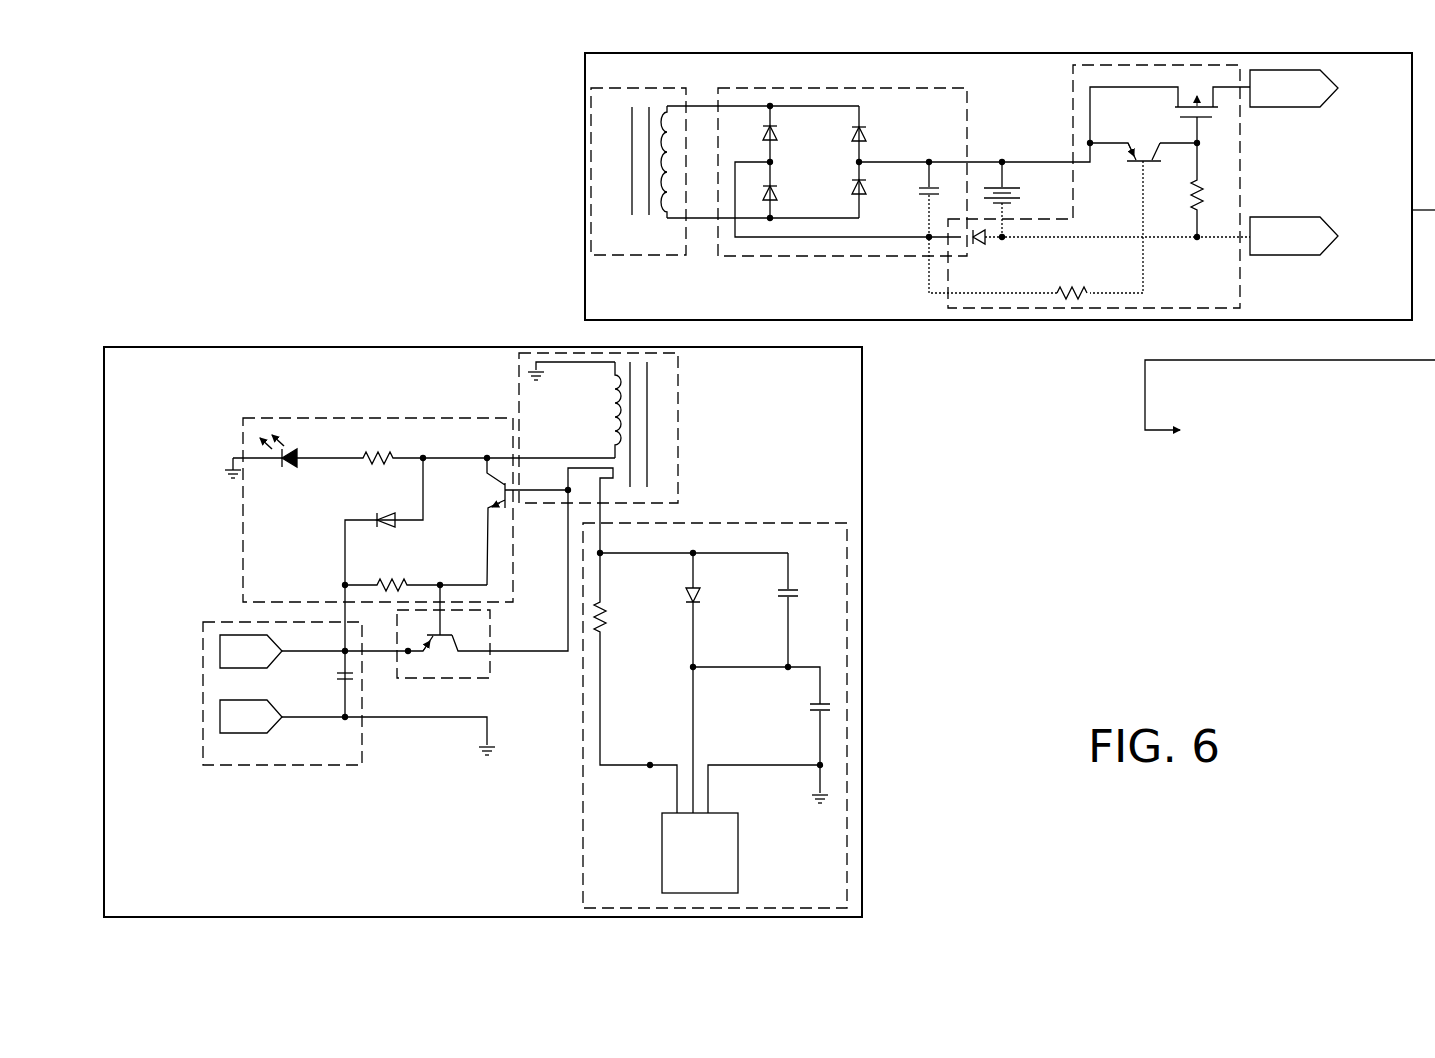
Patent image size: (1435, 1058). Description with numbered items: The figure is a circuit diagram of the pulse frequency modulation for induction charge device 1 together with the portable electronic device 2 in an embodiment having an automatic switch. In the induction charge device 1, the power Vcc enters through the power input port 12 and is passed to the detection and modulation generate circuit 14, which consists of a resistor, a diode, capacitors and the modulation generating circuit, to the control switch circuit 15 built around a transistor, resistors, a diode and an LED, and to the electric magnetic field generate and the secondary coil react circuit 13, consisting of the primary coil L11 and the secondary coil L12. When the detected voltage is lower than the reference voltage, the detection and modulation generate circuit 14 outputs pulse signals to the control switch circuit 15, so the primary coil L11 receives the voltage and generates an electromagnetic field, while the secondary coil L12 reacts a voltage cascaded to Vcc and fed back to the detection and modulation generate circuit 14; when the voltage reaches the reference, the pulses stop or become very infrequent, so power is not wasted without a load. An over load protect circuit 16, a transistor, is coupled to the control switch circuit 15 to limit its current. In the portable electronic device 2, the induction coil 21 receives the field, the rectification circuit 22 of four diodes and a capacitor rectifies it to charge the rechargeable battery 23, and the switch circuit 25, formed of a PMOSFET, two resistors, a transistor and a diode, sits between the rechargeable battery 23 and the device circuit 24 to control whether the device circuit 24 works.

The pulse frequency modulation for induction charge device 1 is at (862, 467).
The portable electronic device 2 is at (1068, 322).
The power input port 12 is at (322, 768).
The electric magnetic field generate and the secondary coil react circuit 13 is at (734, 412).
The detection and modulation generate circuit 14 is at (847, 540).
The control switch circuit 15 is at (308, 417).
The over load protect circuit 16 is at (487, 680).
The induction coil 21 is at (590, 200).
The rectification circuit 22 is at (883, 258).
The rechargeable battery 23 is at (1010, 176).
The device circuit 24 is at (1196, 489).
The switch circuit 25 is at (1146, 63).
The primary coil L11 is at (571, 362).
The secondary coil L12 is at (620, 492).